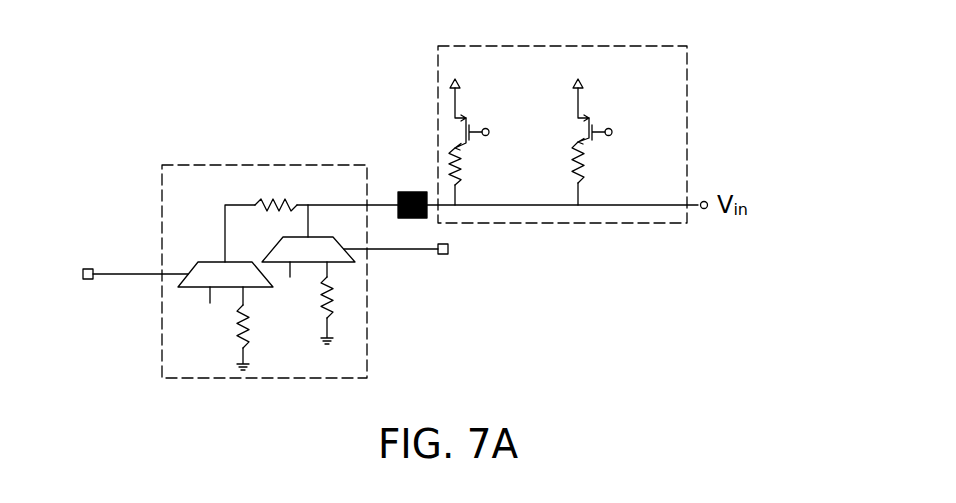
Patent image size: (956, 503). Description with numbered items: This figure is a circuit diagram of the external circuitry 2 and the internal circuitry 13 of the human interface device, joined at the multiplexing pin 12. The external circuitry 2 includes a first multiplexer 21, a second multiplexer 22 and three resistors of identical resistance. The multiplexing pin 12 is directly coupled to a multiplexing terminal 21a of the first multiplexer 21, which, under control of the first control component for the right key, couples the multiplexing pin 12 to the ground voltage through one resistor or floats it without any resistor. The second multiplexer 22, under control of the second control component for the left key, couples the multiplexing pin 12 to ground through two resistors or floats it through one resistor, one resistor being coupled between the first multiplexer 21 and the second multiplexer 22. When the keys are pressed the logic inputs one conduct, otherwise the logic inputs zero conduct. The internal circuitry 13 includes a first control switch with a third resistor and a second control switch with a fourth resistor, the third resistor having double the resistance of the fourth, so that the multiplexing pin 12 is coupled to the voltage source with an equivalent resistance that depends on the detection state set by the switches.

The external circuitry 2 is at (204, 165).
The multiplexing pin 12 is at (399, 195).
The internal circuitry 13 is at (688, 86).
The first multiplexer 21 is at (337, 263).
The multiplexing terminal 21a is at (311, 206).
The second multiplexer 22 is at (197, 288).